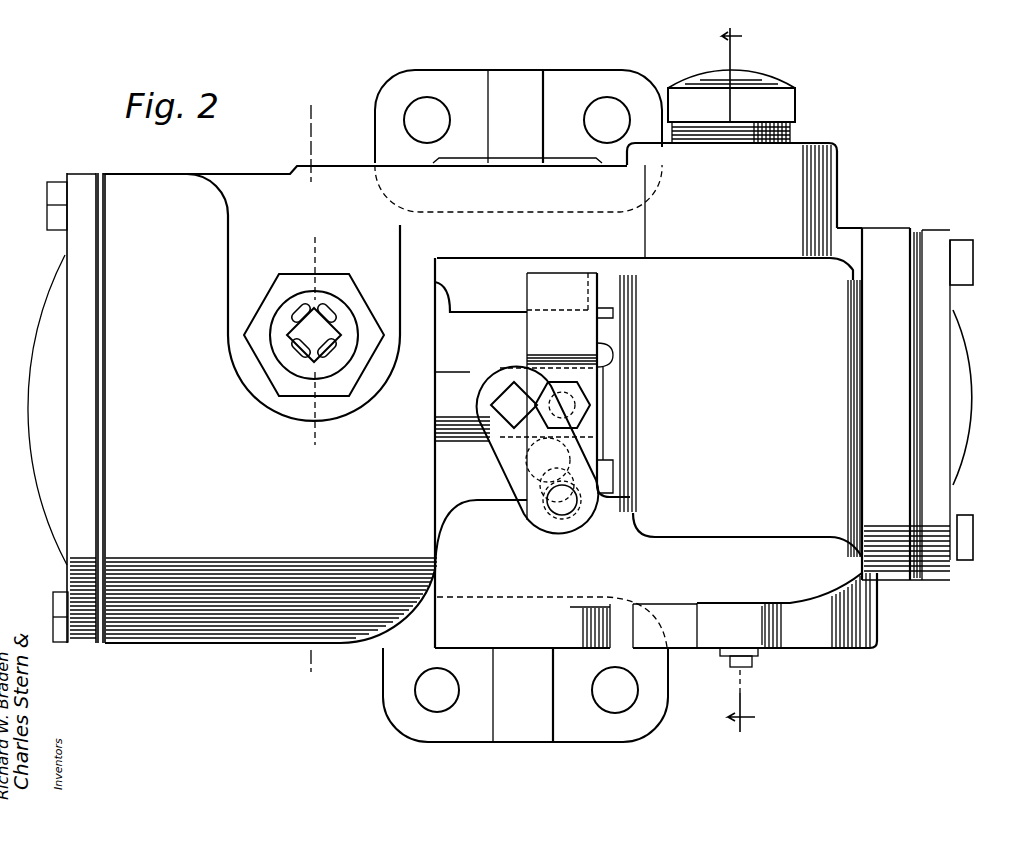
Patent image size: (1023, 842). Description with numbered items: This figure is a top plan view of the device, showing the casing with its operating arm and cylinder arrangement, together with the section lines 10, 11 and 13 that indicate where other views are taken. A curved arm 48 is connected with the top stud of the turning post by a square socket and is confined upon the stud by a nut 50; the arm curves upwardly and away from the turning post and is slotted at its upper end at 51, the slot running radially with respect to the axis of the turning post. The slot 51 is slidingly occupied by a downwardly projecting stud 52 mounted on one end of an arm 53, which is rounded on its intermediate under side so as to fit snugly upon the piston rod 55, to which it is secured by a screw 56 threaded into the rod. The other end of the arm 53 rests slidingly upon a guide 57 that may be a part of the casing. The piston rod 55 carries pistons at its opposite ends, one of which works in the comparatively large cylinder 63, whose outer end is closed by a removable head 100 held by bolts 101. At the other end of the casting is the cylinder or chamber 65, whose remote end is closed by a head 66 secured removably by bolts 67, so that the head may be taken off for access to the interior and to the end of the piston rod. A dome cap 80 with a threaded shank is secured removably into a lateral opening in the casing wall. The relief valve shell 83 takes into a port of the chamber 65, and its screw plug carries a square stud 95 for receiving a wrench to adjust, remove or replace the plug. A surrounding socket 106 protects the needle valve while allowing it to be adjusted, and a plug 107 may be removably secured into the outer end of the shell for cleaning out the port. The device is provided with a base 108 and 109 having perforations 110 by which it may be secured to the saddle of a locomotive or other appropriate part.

The section line 10- 10 is at (743, 373).
The section line 11- 11 is at (316, 341).
The section line 13- 13 is at (309, 393).
The curved arm 48 is at (520, 473).
The nut 50 is at (512, 411).
The slot 51 is at (533, 506).
The stud 52 is at (563, 512).
The arm 53 is at (594, 470).
The piston rod 55 is at (458, 377).
The screw 56 is at (588, 404).
The guide 57 is at (514, 302).
The large cylinder 63 is at (692, 395).
The cylinder 65 is at (348, 407).
The head 66 is at (70, 319).
The bolts 67 is at (62, 642).
The dome cap 80 is at (740, 82).
The shell 83 is at (350, 288).
The stud 95 is at (307, 284).
The removable head 100 is at (940, 400).
The bolts 101 is at (975, 268).
The socket 106 is at (762, 640).
The plug 107 is at (745, 667).
The base 108 is at (486, 736).
The base 109 is at (458, 76).
The perforations 110 is at (412, 117).